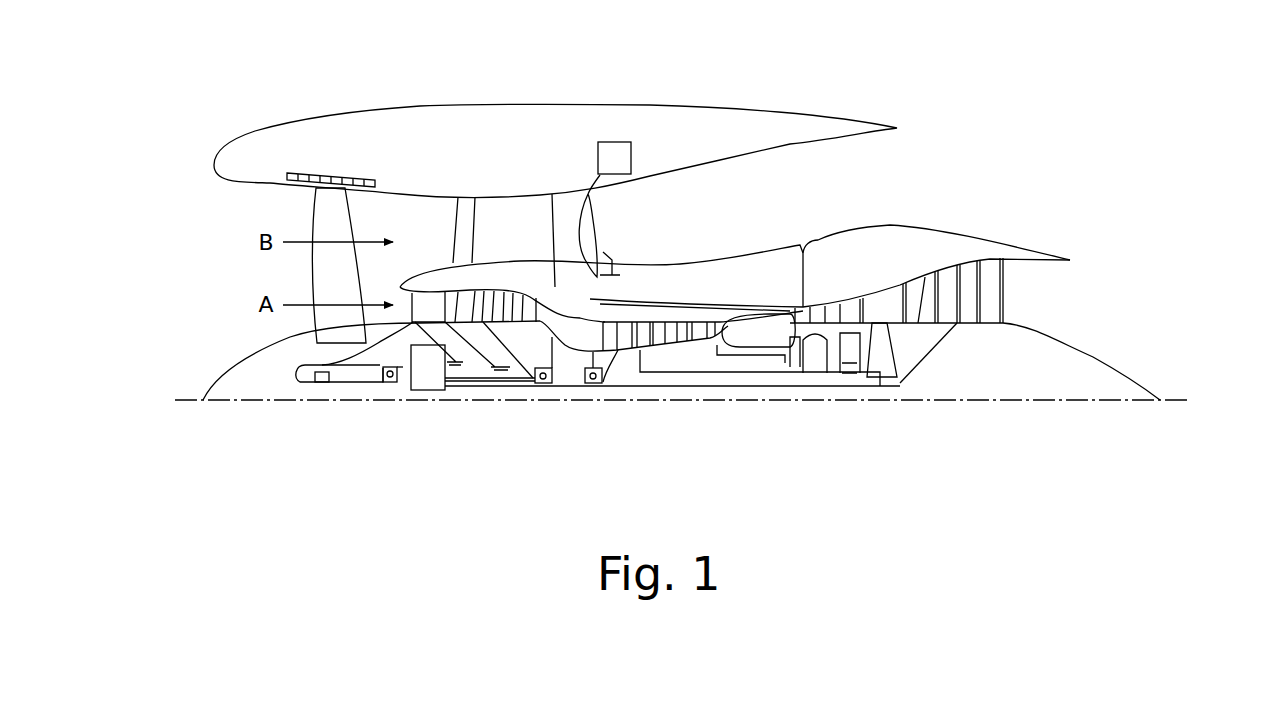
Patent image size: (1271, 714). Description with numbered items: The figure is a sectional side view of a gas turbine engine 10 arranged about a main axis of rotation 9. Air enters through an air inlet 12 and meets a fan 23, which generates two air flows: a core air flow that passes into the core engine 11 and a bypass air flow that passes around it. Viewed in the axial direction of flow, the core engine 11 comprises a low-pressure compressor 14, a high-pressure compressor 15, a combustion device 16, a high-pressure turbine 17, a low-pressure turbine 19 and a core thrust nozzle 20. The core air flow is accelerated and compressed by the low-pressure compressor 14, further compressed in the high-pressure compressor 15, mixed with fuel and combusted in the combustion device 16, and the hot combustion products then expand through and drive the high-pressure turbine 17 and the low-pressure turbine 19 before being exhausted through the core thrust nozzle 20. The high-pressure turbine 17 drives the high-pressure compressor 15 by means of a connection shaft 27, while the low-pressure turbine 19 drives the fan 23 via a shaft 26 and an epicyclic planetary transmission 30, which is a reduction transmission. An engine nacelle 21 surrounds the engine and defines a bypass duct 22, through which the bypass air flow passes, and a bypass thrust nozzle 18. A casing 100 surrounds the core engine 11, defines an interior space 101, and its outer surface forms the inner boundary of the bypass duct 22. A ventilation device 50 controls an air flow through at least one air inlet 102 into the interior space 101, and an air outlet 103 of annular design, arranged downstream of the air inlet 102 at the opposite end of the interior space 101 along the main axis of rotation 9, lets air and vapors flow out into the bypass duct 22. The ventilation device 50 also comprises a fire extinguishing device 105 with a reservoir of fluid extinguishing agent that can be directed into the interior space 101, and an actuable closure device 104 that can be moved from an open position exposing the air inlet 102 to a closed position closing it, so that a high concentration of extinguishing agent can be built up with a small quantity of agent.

The main axis of rotation 9 is at (1043, 403).
The gas turbine engine 10 is at (284, 128).
The core engine 11 is at (764, 293).
The air inlet 12 is at (232, 209).
The low-pressure compressor 14 is at (503, 300).
The high-pressure compressor 15 is at (665, 325).
The combustion device 16 is at (744, 340).
The high-pressure turbine 17 is at (818, 320).
The bypass thrust nozzle 18 is at (1012, 125).
The low-pressure turbine 19 is at (970, 315).
The core thrust nozzle 20 is at (1050, 299).
The engine nacelle 21 is at (470, 122).
The bypass duct 22 is at (834, 179).
The fan 23 is at (322, 286).
The shaft 26 is at (627, 387).
The connection shaft 27 is at (700, 374).
The epicyclic planetary transmission 30 is at (427, 377).
The ventilation device 50 is at (590, 182).
The casing 100 is at (650, 268).
The interior space 101 is at (730, 283).
The air inlet 102 is at (587, 240).
The air outlet 103 is at (803, 250).
The actuable closure device 104 is at (600, 267).
The fire extinguishing device 105 is at (617, 140).